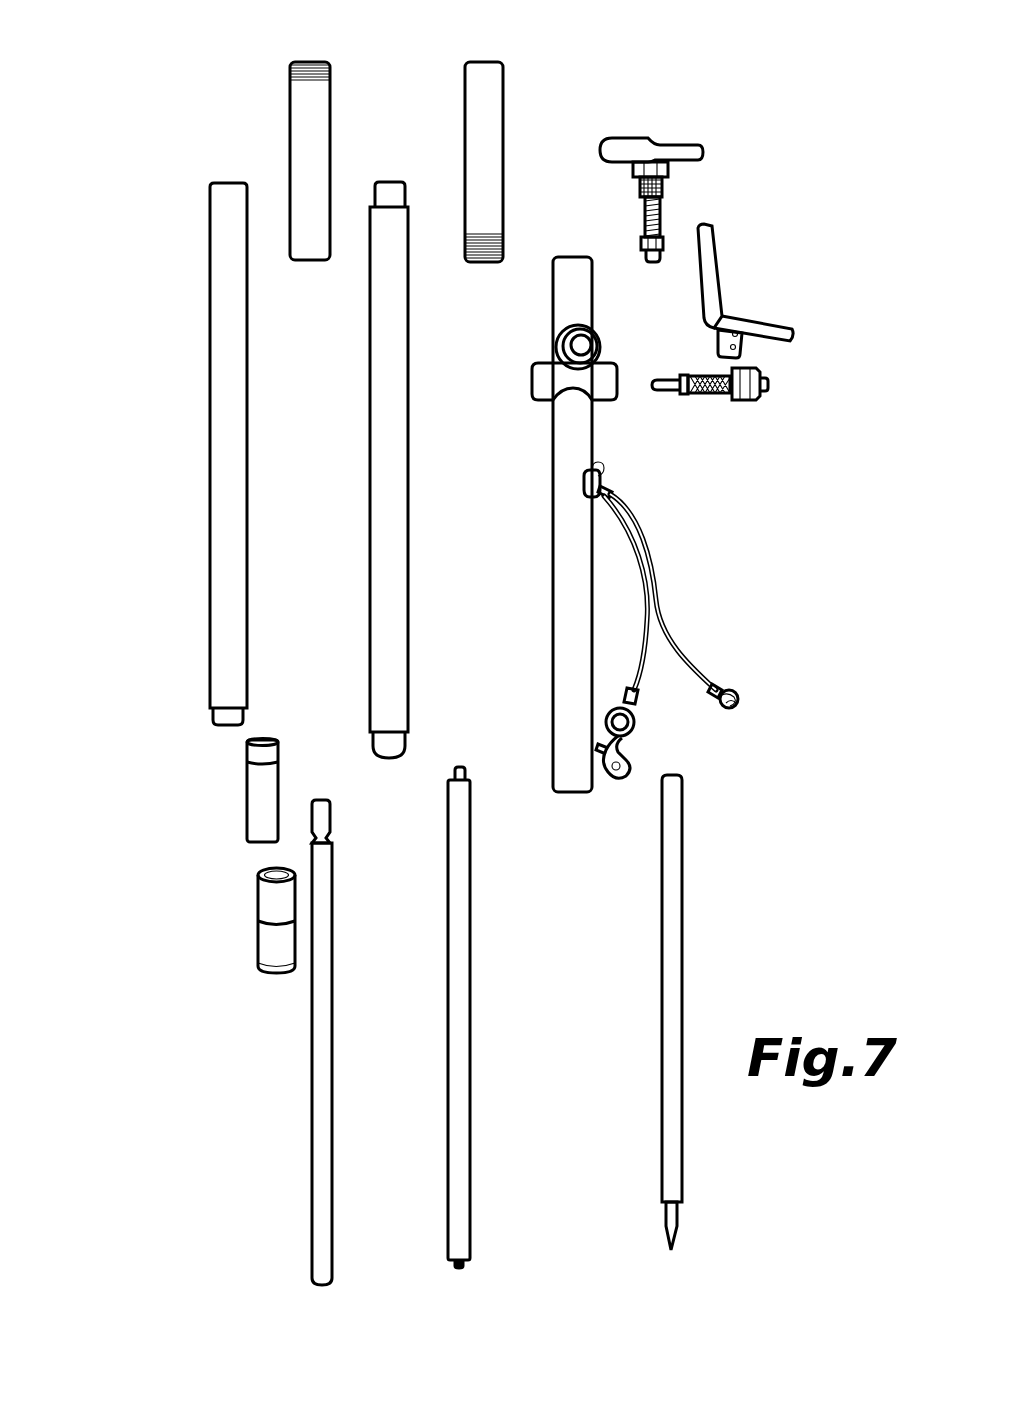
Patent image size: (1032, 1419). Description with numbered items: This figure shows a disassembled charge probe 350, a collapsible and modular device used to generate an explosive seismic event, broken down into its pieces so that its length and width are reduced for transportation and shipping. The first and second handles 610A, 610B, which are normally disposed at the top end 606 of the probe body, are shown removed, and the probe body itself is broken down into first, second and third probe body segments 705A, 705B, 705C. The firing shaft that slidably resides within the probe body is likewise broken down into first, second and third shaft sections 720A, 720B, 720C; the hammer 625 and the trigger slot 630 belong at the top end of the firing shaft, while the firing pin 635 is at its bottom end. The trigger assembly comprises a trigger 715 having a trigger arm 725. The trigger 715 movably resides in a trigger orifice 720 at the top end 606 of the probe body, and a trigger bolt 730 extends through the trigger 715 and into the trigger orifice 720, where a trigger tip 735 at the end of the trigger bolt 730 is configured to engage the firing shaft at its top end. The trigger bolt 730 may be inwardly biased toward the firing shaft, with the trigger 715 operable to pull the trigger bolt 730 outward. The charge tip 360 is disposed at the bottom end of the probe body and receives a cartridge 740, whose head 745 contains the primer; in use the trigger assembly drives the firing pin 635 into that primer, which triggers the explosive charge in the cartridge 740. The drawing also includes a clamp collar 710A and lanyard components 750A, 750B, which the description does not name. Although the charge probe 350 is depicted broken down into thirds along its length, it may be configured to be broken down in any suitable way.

The charge probe 350 is at (157, 80).
The first handle 610A is at (290, 62).
The second handle 610B is at (465, 62).
The hammer 625 is at (705, 140).
The trigger arm 725 is at (715, 250).
The trigger 715 is at (792, 333).
The top end of probe body 606 is at (523, 524).
The trigger tip 735 is at (737, 366).
The trigger orifice 720 is at (555, 335).
The clamp collar 710A is at (531, 385).
The trigger bolt 730 is at (770, 385).
The third probe body segment 705C is at (209, 460).
The second probe body segment 705B is at (370, 517).
The first probe body segment 705A is at (553, 568).
The lanyard cable 750A is at (678, 643).
The snap hook 750B is at (638, 688).
The head of cartridge 745 is at (246, 752).
The cartridge 740 is at (220, 806).
The trigger slot 630 is at (332, 835).
The charge tip 360 is at (258, 906).
The first shaft section 720A is at (317, 1042).
The second shaft section 720B is at (470, 1060).
The third shaft section 720C is at (666, 1029).
The firing pin 635 is at (677, 1217).